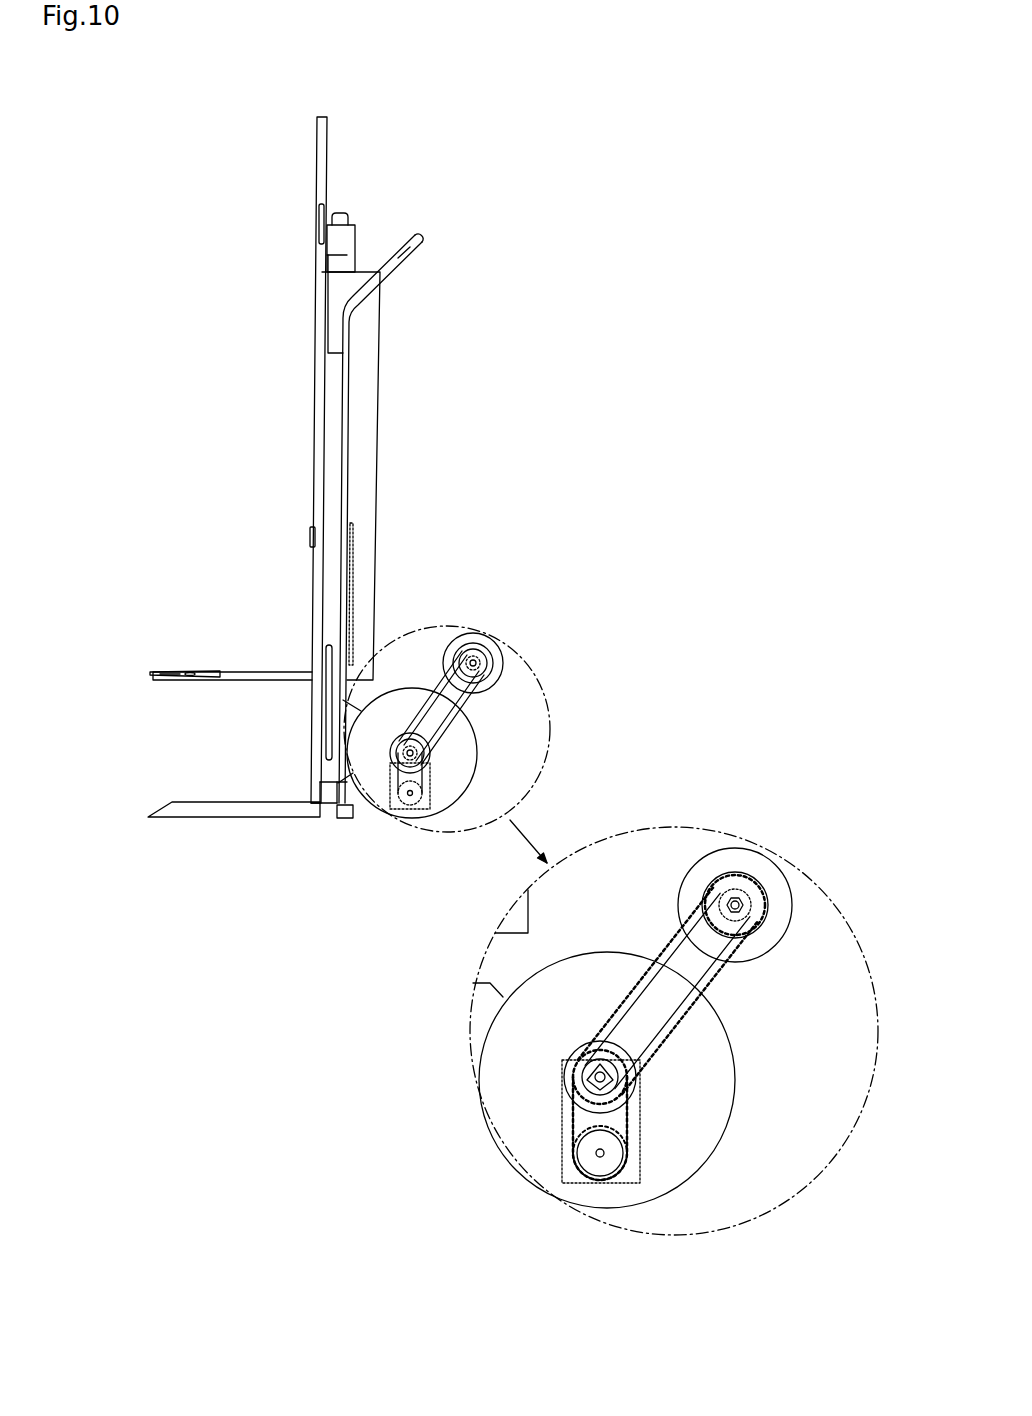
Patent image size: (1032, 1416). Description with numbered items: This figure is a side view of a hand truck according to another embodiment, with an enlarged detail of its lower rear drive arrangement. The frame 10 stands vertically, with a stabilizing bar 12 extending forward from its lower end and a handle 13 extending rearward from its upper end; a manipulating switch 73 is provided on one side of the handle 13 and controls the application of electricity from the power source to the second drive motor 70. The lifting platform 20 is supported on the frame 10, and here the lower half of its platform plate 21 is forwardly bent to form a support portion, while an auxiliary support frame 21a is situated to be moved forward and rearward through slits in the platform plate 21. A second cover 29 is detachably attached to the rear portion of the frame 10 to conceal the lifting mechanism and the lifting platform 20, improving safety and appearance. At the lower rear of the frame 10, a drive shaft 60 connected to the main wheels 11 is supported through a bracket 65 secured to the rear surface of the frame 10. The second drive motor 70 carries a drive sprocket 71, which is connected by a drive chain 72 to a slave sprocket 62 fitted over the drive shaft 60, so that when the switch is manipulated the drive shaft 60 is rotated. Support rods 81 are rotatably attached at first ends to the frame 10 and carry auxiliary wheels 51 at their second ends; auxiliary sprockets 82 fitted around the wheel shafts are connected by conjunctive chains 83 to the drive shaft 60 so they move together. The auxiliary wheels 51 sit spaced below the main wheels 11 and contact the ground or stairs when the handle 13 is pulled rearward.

The frame 10 is at (333, 397).
The wheels 11 is at (462, 745).
The stabilizing bars 12 is at (240, 812).
The handle 13 is at (422, 243).
The lifting platform 20 is at (310, 575).
The platform plate 21 is at (275, 679).
The auxiliary support frame 21a is at (165, 677).
The second cover 29 is at (368, 440).
The auxiliary wheels 51 is at (480, 655).
The drive shaft 60 is at (595, 1078).
The slave sprocket 62 is at (582, 1112).
The bracket 65 is at (340, 782).
The second drive motor 70 is at (593, 1173).
The drive sprocket 71 is at (630, 1130).
The drive chain 72 is at (432, 773).
The manipulating switch 73 is at (348, 215).
The support rods 81 is at (710, 938).
The auxiliary sprockets 82 is at (711, 882).
The conjunctive chains 83 is at (465, 703).